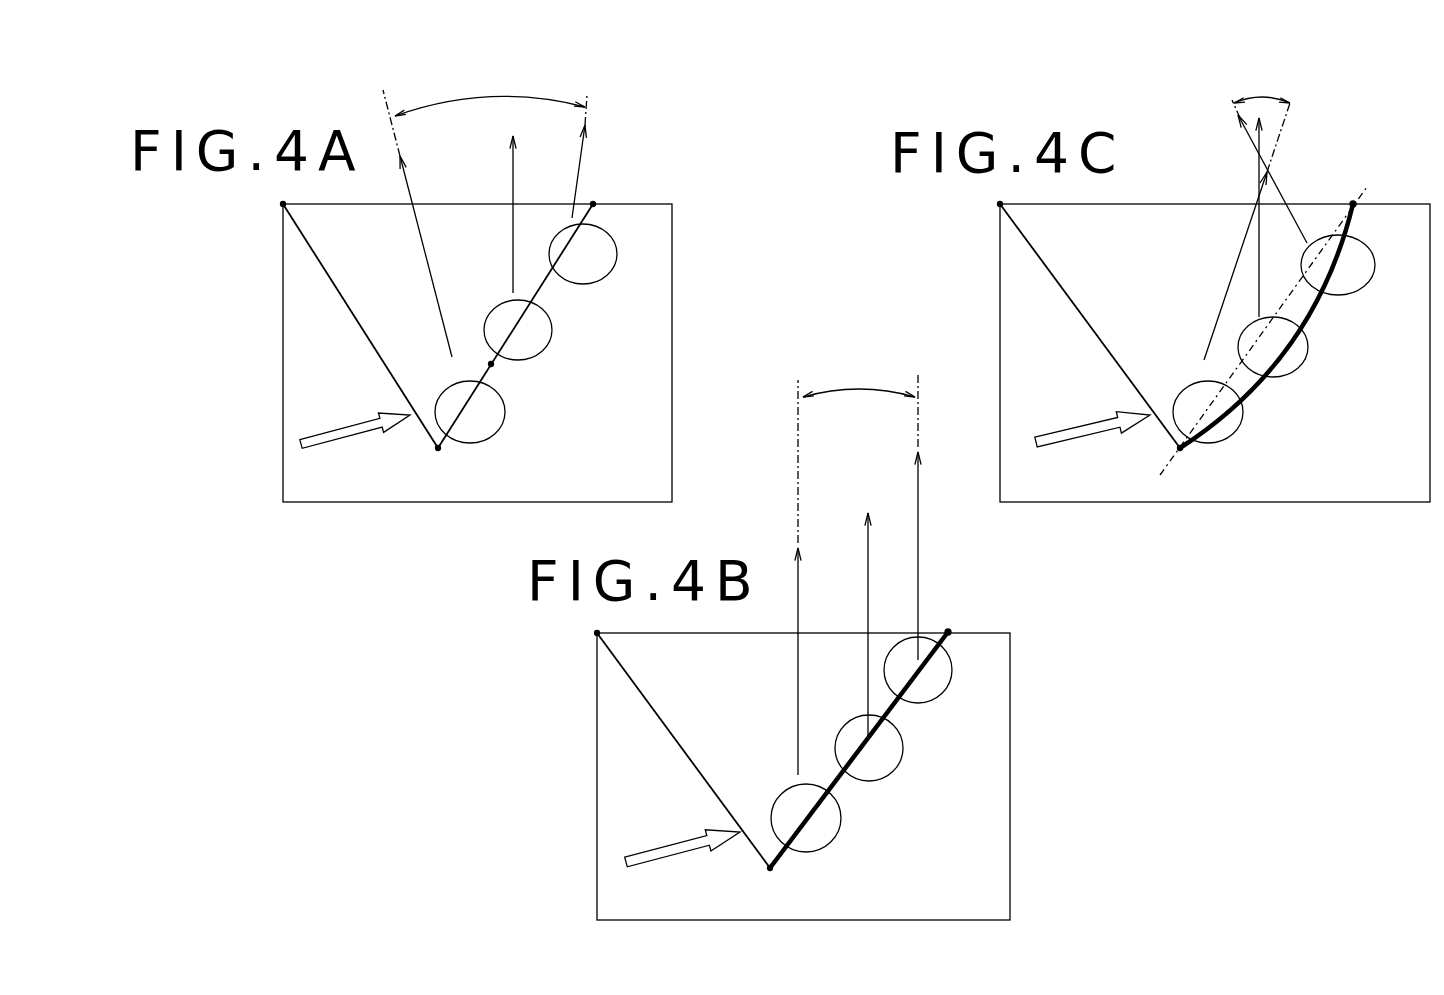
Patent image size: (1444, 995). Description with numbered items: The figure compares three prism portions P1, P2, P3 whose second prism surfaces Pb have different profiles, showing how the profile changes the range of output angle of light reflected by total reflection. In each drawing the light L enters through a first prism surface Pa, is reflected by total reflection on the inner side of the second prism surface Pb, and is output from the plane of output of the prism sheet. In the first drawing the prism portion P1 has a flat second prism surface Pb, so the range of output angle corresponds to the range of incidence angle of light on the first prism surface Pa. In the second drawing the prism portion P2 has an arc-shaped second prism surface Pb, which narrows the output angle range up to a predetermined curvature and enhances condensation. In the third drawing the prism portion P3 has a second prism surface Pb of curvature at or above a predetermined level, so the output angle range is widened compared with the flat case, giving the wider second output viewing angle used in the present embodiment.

In FIG. 4A, the first prism surface Pa is at (332, 281).
In FIG. 4B, the first prism surface Pa is at (678, 745).
In FIG. 4C, the first prism surface Pa is at (1083, 318).
In FIG. 4A, the second prism surface Pb is at (492, 366).
In FIG. 4B, the second prism surface Pb is at (843, 790).
In FIG. 4C, the second prism surface Pb is at (1253, 385).
In FIG. 4A, the light L is at (357, 438).
In FIG. 4B, the light L is at (652, 866).
In FIG. 4C, the light L is at (1095, 435).
In FIG. 4A, the prism portion P1 is at (411, 438).
In FIG. 4B, the prism portion P2 is at (740, 852).
In FIG. 4C, the prism portion P3 is at (1156, 438).